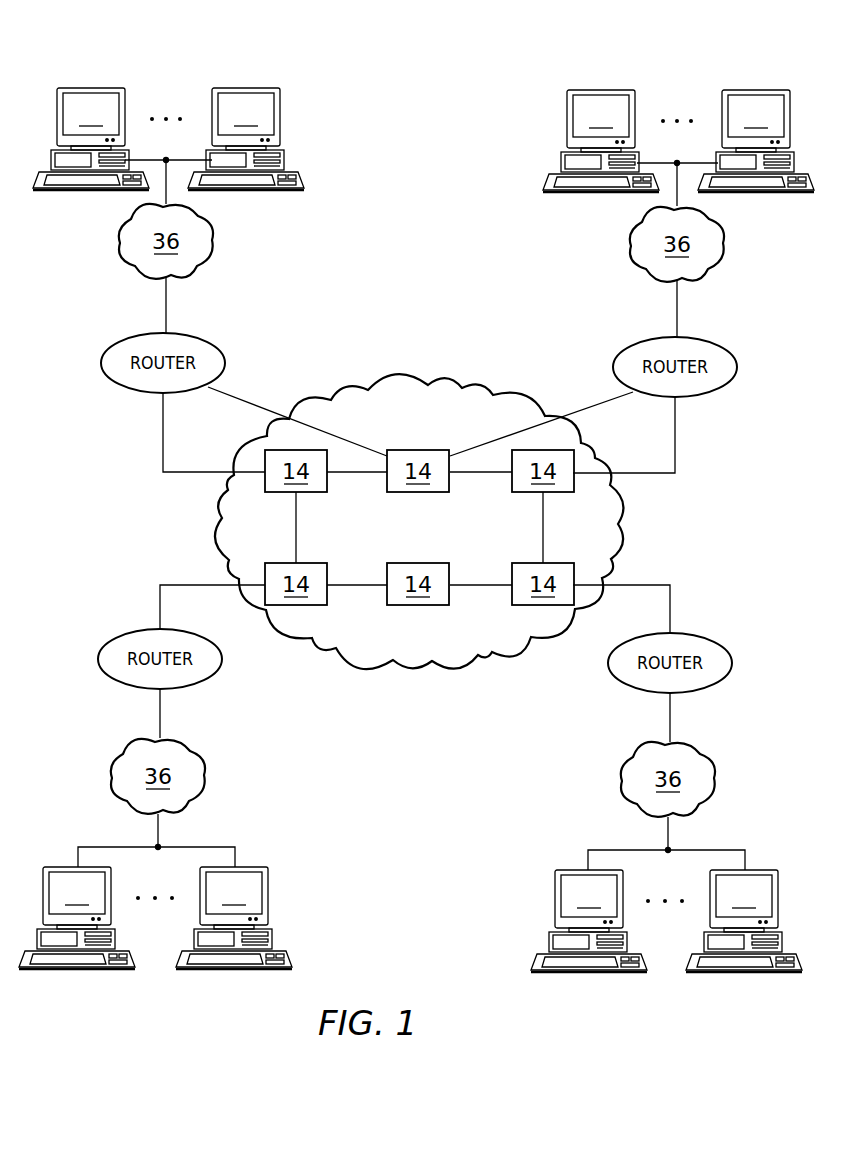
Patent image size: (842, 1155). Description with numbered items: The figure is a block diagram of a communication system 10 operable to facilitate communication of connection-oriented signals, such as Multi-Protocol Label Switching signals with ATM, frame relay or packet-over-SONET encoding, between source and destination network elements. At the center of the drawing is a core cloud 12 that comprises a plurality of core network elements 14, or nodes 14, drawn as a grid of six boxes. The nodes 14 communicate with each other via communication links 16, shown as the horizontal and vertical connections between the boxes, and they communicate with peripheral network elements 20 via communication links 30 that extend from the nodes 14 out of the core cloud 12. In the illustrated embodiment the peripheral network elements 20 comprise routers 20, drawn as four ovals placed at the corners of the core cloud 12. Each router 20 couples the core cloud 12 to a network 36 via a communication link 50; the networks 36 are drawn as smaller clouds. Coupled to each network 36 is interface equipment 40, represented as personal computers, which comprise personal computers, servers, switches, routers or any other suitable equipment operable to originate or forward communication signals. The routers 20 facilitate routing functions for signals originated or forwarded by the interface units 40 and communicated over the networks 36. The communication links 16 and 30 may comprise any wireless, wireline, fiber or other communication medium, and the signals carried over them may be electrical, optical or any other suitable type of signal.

The communication system 10 is at (312, 75).
The core cloud 12 is at (390, 378).
The core network element 14 is at (419, 527).
The communication link 16 is at (357, 475).
The peripheral network element 20 is at (101, 363).
The communication link 30 is at (702, 430).
The network 36 is at (411, 514).
The interface equipment 40 is at (416, 530).
The communication link 50 is at (163, 313).